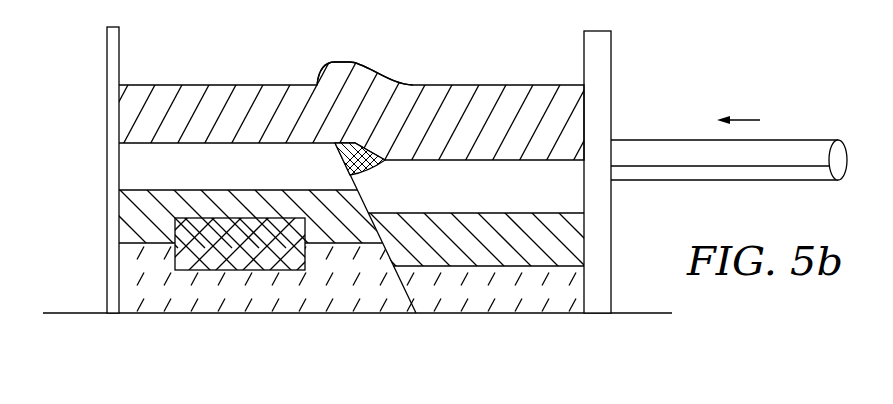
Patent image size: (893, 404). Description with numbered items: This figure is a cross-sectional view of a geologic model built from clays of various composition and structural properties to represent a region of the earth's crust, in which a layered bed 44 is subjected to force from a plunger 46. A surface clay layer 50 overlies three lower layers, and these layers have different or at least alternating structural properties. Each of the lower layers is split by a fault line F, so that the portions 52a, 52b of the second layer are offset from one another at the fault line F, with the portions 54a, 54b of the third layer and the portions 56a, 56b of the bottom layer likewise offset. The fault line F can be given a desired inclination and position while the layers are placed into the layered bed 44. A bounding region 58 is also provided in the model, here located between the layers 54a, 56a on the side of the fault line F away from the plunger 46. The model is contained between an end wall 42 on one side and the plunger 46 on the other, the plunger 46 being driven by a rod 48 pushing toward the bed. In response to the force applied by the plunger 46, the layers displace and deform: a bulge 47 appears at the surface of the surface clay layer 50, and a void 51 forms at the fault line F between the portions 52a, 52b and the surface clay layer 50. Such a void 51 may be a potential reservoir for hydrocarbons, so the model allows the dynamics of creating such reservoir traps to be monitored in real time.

The left end wall 42 is at (107, 57).
The layered bed 44 is at (231, 47).
The plunger 46 is at (611, 62).
The bulge 47 is at (342, 61).
The piston rod 48 is at (805, 140).
The surface clay layer 50 is at (374, 125).
The void 51 is at (380, 168).
The portion of layer 52a is at (207, 181).
The portion of layer 52b is at (476, 193).
The layer 54a is at (317, 231).
The layer 54b is at (476, 256).
The layer 56a is at (317, 293).
The layer 56b is at (476, 305).
The bounding region 58 is at (254, 258).
The fault line F is at (416, 313).